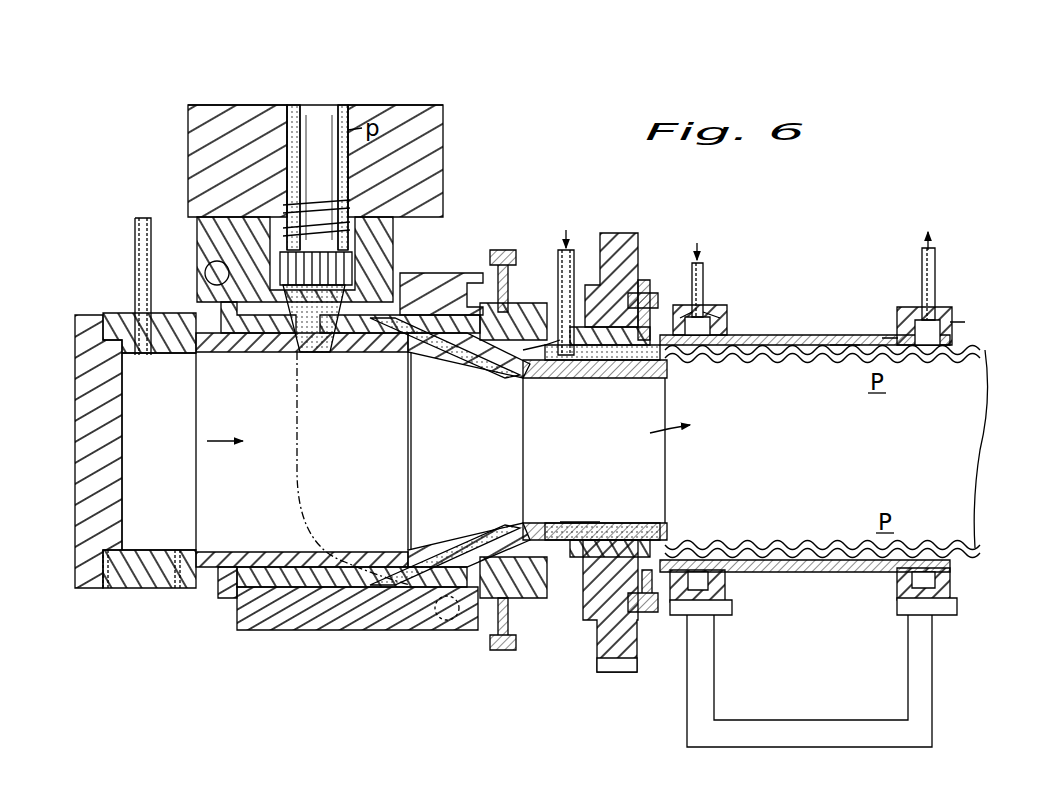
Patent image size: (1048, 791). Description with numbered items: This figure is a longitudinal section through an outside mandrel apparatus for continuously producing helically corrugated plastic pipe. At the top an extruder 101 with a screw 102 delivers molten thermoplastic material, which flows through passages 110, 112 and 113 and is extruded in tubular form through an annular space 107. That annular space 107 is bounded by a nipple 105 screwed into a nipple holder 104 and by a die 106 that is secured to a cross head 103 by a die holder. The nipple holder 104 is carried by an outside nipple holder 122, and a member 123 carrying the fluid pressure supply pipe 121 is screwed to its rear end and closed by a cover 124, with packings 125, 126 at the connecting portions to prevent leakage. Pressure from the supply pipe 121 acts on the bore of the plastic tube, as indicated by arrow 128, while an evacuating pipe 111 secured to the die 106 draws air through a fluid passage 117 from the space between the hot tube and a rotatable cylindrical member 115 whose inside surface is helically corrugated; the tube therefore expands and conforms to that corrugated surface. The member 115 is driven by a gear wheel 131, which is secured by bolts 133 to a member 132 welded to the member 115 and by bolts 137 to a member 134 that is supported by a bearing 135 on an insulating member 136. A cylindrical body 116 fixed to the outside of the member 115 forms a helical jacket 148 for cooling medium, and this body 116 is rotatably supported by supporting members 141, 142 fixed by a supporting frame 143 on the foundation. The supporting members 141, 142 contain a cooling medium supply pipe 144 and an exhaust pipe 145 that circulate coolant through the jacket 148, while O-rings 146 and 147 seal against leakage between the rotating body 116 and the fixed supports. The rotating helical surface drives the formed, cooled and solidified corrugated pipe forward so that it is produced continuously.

The extruder 101 is at (432, 108).
The screw 102 is at (316, 195).
The cross head 103 is at (440, 275).
The nipple holder 104 is at (340, 352).
The nipple 105 is at (492, 366).
The die 106 is at (517, 450).
The annular space 107 is at (668, 368).
The passage 110 is at (348, 173).
The evacuating pipe 111 is at (568, 245).
The passage 112 is at (310, 352).
The passage 113 is at (452, 352).
The rotatable cylindrical member 115 is at (805, 345).
The cylindrical body 116 is at (770, 335).
The fluid passage 117 is at (600, 372).
The fluid pressure supply pipe 121 is at (146, 218).
The outside nipple holder 122 is at (225, 598).
The member 123 is at (150, 588).
The cover 124 is at (85, 588).
The packing 125 is at (178, 588).
The packing 126 is at (105, 588).
The arrow 128 is at (182, 451).
The gear wheel 131 is at (625, 233).
The member 132 is at (642, 295).
The bolts 133 is at (648, 300).
The member 134 is at (556, 375).
The bearing 135 is at (606, 450).
The insulating member 136 is at (600, 530).
The bolts 137 is at (622, 370).
The supporting member 141 is at (727, 322).
The supporting member 142 is at (950, 312).
The supporting frame 143 is at (795, 747).
The cooling medium supply pipe 144 is at (703, 262).
The exhaust pipe 145 is at (935, 248).
The O-ring 146 is at (712, 300).
The O-ring 147 is at (923, 317).
The helical jacket 148 is at (840, 335).